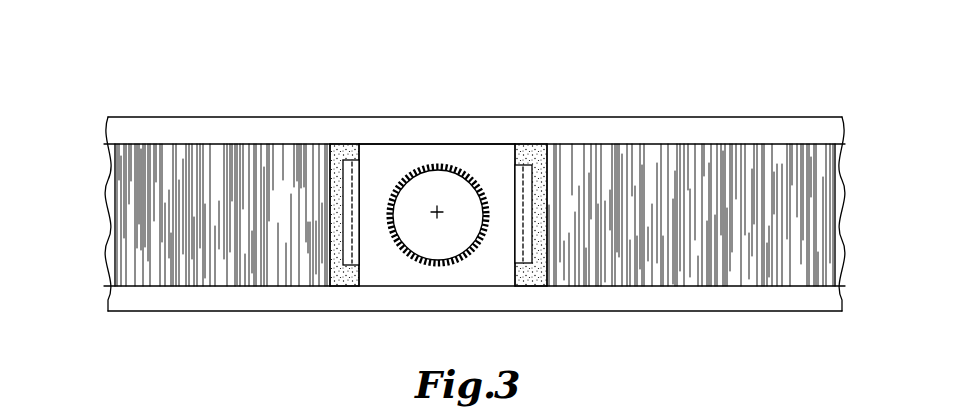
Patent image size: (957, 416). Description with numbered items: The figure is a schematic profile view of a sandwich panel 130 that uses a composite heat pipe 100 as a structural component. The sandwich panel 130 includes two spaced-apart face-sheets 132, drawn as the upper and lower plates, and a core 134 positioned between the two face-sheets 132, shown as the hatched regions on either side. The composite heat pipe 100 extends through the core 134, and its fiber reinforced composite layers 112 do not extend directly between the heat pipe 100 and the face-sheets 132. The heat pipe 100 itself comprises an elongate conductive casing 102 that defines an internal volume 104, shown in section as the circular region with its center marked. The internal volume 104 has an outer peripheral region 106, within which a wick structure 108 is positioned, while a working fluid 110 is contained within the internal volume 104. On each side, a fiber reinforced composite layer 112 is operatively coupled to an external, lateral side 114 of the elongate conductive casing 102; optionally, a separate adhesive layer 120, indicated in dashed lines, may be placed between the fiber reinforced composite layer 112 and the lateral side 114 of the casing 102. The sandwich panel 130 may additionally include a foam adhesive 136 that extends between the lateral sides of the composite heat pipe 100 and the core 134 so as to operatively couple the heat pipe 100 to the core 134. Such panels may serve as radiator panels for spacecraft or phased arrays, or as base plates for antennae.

The composite heat pipe 100 is at (423, 197).
The elongate conductive casing 102 is at (415, 144).
The internal volume 104 is at (411, 187).
The outer peripheral region 106 is at (453, 220).
The wick structure 108 is at (397, 215).
The working fluid 110 is at (447, 247).
The fiber reinforced composite layer 112 is at (423, 204).
The external, lateral side 114 is at (358, 190).
The adhesive layer 120 is at (533, 211).
The sandwich panel 130 is at (474, 193).
The face-sheet 132 is at (760, 117).
The core 134 is at (176, 163).
The foam adhesive 136 is at (332, 158).